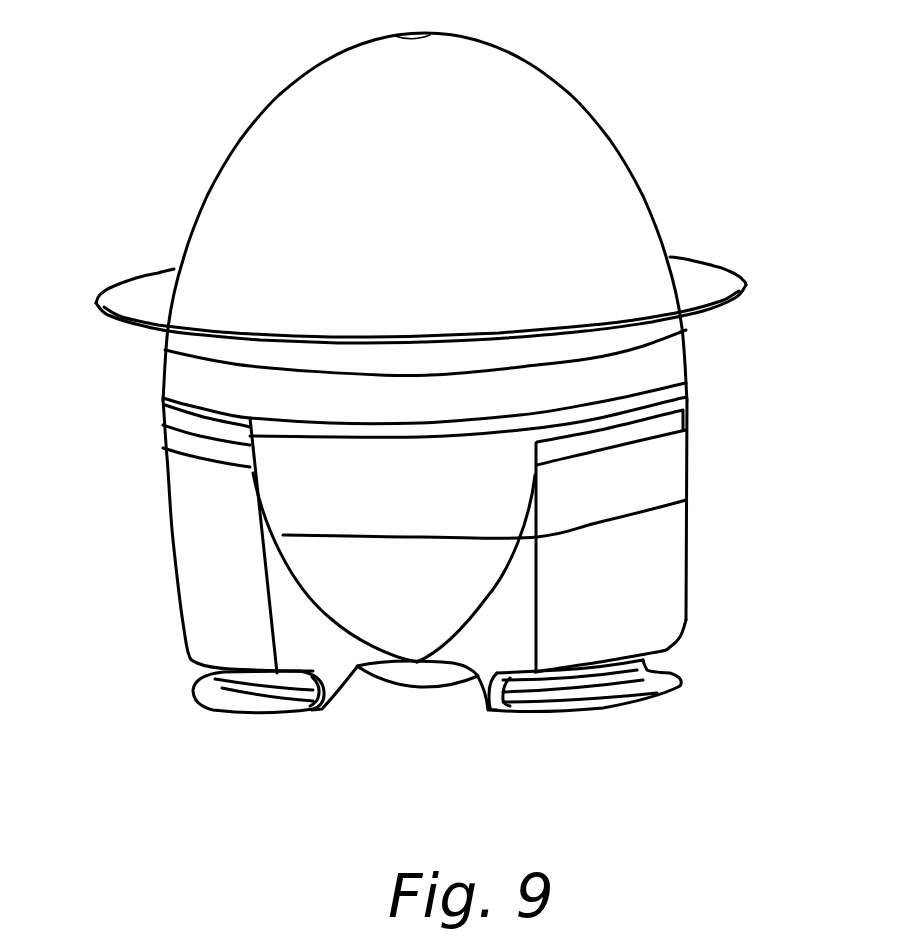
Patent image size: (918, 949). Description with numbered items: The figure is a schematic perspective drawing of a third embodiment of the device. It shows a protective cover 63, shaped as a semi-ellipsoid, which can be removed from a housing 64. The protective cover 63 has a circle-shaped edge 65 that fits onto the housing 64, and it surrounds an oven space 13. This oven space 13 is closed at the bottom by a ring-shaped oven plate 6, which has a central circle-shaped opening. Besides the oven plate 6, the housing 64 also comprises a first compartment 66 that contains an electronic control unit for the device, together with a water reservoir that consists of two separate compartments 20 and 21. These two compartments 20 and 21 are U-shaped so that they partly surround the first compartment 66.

The oven space 13 is at (402, 216).
The protective cover 63 is at (313, 178).
The circle-shaped edge 65 is at (187, 358).
The oven plate 6 is at (675, 365).
The housing 64 is at (435, 505).
The first compartment 66 is at (203, 590).
The compartment 20 is at (657, 487).
The compartment 21 is at (645, 622).